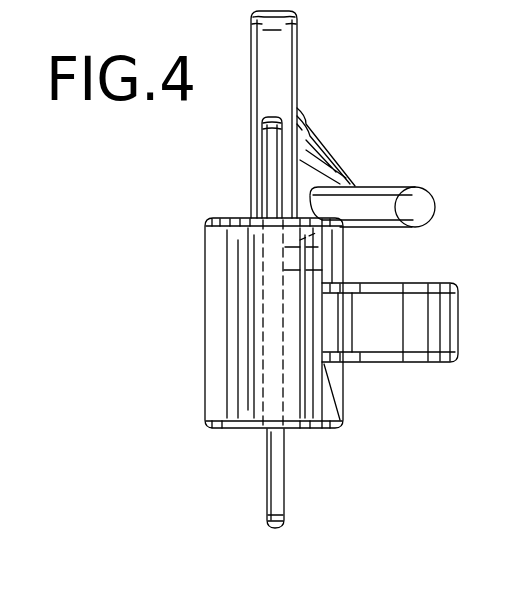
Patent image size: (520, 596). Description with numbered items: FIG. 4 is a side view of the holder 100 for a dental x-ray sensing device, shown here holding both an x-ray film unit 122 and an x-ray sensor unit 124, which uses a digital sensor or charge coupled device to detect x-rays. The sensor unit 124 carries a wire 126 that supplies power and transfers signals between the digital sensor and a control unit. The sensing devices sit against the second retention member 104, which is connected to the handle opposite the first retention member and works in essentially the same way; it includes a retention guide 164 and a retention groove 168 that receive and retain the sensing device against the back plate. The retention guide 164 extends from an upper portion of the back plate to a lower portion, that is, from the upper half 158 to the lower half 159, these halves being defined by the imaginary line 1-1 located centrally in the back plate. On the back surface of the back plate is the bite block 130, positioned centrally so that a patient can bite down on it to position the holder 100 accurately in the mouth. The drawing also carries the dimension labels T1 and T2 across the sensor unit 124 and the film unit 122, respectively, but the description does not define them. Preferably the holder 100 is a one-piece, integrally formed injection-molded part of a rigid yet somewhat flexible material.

The holder 100 is at (203, 431).
The second retention member 104 is at (344, 431).
The x-ray film unit 122 is at (276, 118).
The x-ray sensor unit 124 is at (297, 12).
The wire 126 is at (382, 188).
The bite block 130 is at (415, 285).
The upper half 158 is at (338, 265).
The lower half 159 is at (334, 388).
The retention guide 164 is at (237, 406).
The retention groove 168 is at (340, 270).
The sleeve thickness T1 is at (222, 62).
The pin thickness T2 is at (307, 148).
The imaginary line 1-1 is at (325, 328).